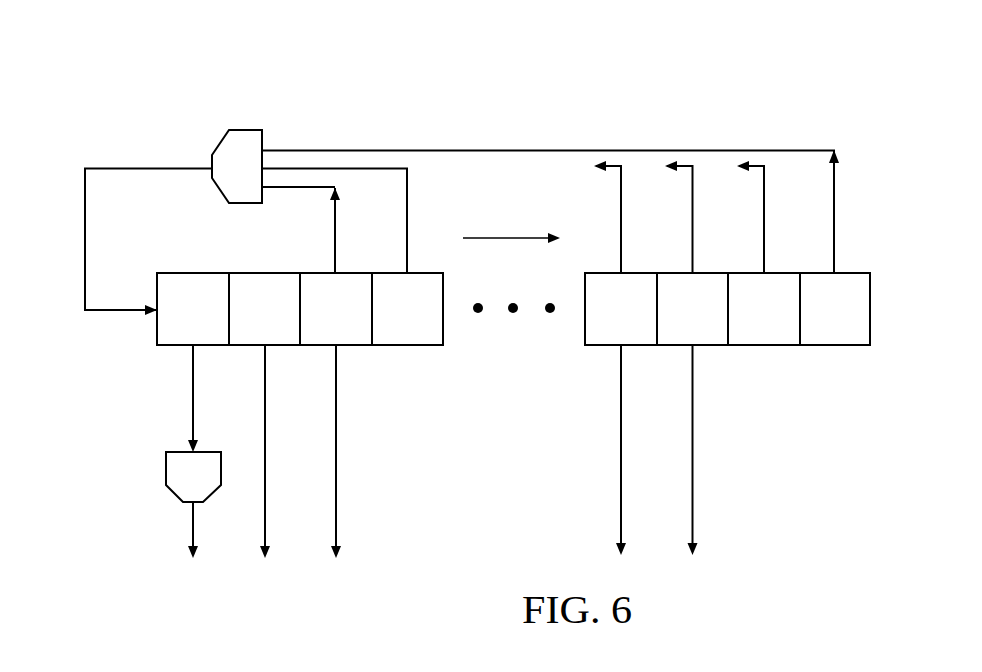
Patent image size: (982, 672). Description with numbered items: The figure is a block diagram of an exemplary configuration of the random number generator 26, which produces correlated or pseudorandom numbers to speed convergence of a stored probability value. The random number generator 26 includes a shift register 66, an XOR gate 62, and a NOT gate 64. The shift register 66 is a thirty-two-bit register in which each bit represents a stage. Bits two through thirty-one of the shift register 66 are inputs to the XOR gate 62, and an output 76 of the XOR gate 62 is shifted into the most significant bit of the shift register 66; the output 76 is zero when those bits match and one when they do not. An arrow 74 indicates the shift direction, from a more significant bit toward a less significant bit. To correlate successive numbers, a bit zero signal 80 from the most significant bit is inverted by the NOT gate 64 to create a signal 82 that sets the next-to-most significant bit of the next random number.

The random number generator 26 is at (424, 70).
The XOR gate 62 is at (243, 130).
The output of the XOR gate 76 is at (96, 309).
The shift register 66 is at (145, 347).
The arrow indicating the shift direction 74 is at (511, 227).
The bit "0" signal 80 is at (195, 372).
The NOT gate 64 is at (165, 460).
The signal 82 is at (193, 512).